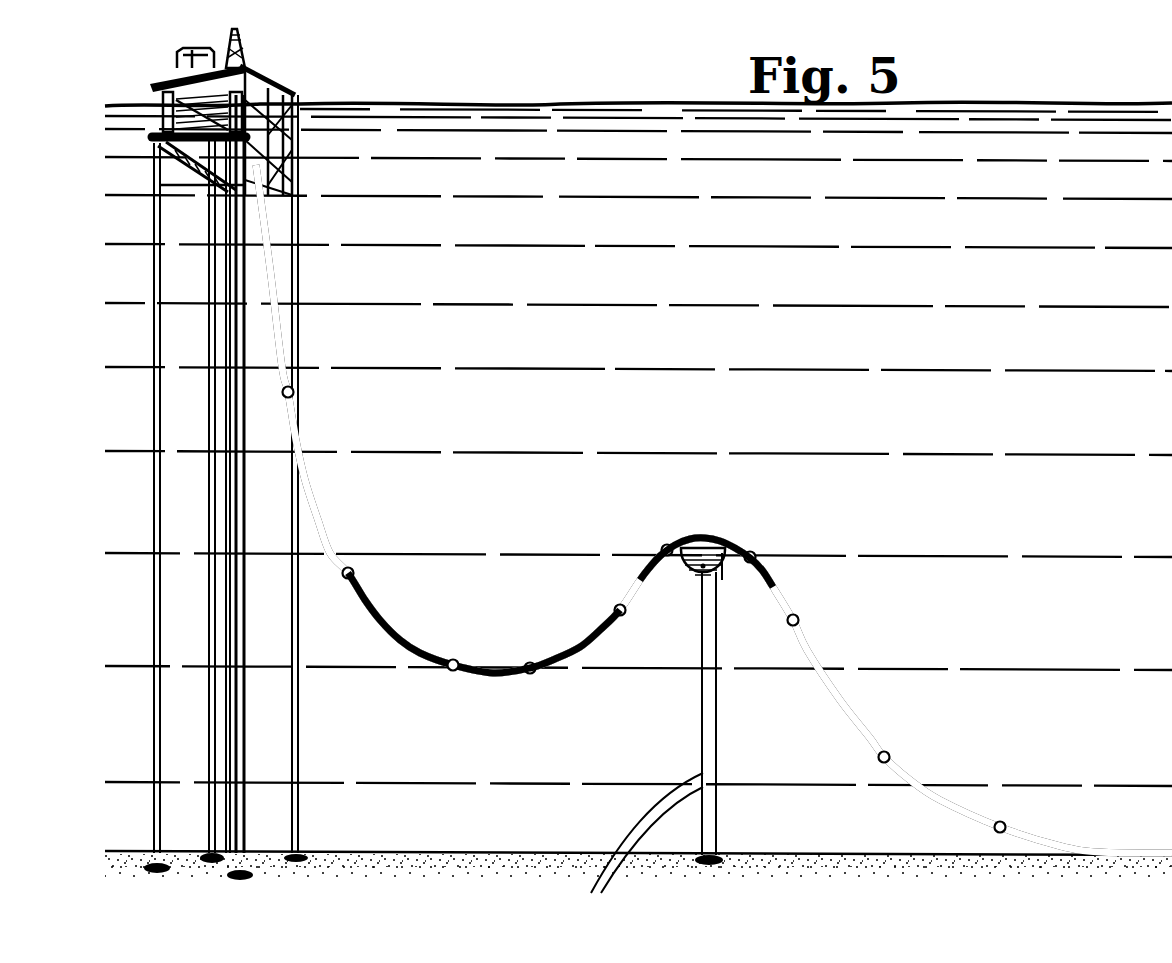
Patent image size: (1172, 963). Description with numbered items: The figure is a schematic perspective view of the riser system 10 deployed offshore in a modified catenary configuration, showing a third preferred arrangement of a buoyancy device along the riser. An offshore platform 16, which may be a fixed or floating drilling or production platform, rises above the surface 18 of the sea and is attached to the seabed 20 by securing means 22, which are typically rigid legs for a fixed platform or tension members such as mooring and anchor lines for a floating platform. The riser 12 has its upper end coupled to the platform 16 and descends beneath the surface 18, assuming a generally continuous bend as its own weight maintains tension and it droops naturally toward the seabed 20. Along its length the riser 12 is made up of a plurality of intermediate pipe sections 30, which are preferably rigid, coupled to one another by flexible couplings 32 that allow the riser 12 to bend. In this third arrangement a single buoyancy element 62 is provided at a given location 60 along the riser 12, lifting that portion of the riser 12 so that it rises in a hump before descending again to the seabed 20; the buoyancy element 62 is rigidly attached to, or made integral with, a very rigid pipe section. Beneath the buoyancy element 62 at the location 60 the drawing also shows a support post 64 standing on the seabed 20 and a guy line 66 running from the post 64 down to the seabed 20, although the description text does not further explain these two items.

The riser system 10 is at (655, 498).
The riser 12 is at (317, 488).
The offshore platform 16 is at (268, 84).
The surface of the sea 18 is at (549, 108).
The seabed 20 is at (452, 851).
The securing means 22 is at (297, 749).
The intermediate pipe sections 30 is at (378, 605).
The flexible couplings 32 is at (460, 664).
The location 60 is at (710, 538).
The buoyancy element 62 is at (744, 548).
The support post 64 is at (707, 872).
The guy line 66 is at (638, 848).